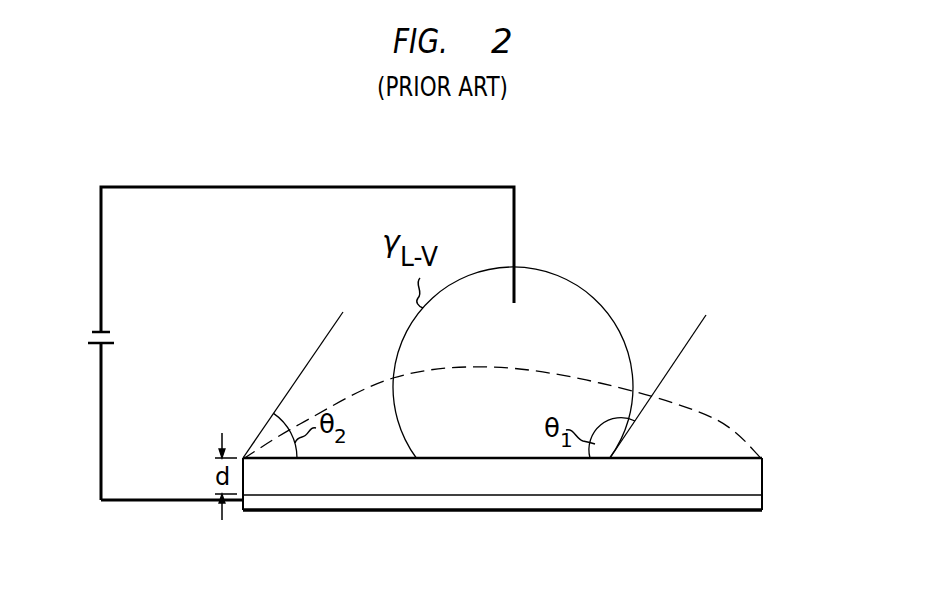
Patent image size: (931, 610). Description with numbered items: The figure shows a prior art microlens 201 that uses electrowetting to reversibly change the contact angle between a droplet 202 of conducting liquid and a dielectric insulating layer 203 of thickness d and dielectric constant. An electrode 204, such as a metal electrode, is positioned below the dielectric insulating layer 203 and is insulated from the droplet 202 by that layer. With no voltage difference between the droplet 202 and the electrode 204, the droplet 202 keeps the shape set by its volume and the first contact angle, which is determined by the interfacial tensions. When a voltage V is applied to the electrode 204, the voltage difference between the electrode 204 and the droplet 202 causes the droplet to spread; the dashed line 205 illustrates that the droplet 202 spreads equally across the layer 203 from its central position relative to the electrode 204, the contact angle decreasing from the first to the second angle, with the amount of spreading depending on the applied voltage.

The microlens 201 is at (196, 297).
The droplet 202 is at (580, 288).
The dielectric insulating layer 203 is at (763, 478).
The electrode 204 is at (364, 512).
The dashed line 205 is at (713, 418).